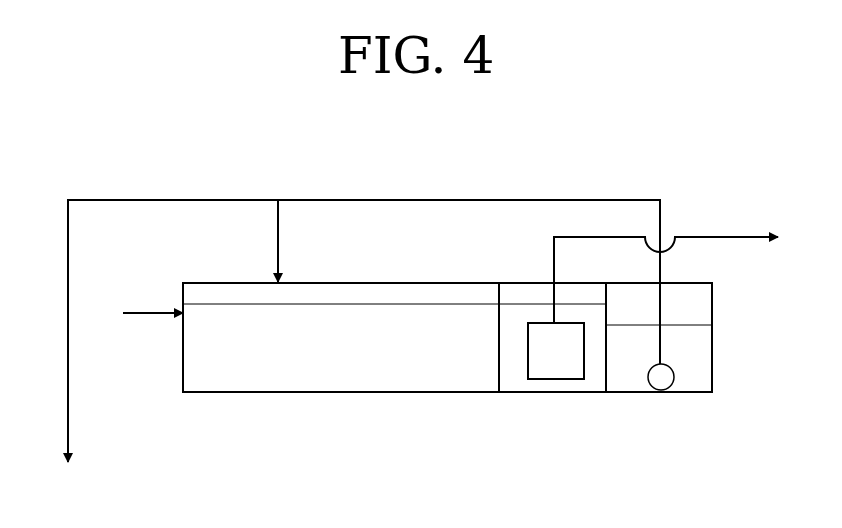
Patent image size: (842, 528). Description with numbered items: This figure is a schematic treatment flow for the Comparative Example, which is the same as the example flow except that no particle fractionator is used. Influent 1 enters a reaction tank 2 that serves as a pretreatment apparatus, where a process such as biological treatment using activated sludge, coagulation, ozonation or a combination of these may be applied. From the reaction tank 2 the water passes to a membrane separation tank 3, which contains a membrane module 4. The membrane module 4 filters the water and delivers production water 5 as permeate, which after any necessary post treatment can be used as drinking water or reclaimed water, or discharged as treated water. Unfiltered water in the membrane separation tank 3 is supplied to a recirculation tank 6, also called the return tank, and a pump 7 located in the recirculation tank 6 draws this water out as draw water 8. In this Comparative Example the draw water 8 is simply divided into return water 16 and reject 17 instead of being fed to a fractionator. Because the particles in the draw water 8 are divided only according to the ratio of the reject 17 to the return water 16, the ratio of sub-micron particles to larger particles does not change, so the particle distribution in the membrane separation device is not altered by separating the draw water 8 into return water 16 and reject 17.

The influent 1 is at (150, 313).
The reaction tank 2 is at (343, 392).
The membrane separation tank 3 is at (525, 392).
The membrane module 4 is at (542, 322).
The production water 5 is at (708, 237).
The recirculation tank 6 is at (632, 392).
The pump 7 is at (675, 377).
The draw water 8 is at (482, 200).
The return water 16 is at (278, 263).
The reject 17 is at (150, 200).